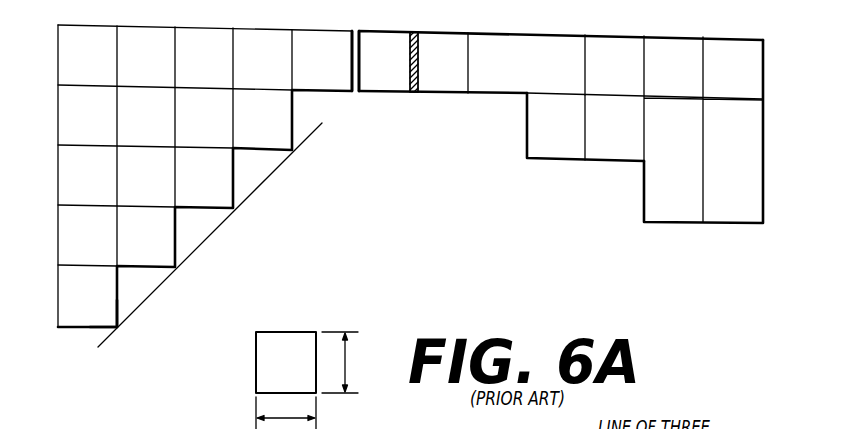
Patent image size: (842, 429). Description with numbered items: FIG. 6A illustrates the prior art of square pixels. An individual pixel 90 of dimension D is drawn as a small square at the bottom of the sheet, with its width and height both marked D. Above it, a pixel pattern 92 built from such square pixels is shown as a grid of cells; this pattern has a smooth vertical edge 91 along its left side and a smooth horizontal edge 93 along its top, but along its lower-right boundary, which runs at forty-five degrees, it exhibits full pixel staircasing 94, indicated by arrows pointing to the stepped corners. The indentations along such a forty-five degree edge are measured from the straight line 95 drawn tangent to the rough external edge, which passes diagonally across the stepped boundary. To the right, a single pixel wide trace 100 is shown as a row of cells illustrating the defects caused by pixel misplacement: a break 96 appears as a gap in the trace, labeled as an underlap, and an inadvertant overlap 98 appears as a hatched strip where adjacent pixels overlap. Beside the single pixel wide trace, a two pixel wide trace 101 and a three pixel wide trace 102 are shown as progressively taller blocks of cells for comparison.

The pixel 90 is at (256, 357).
The smooth vertical edge 91 is at (57, 250).
The pixel pattern 92 is at (116, 323).
The smooth horizontal edge 93 is at (220, 27).
The full pixel staircasing 94 is at (132, 272).
The straight line 95 is at (144, 303).
The breaks 96 is at (355, 97).
The inadvertant overlap 98 is at (412, 96).
The single pixel wide trace 100 is at (516, 95).
The two pixel wide trace 101 is at (584, 164).
The three pixel wide trace 102 is at (709, 226).